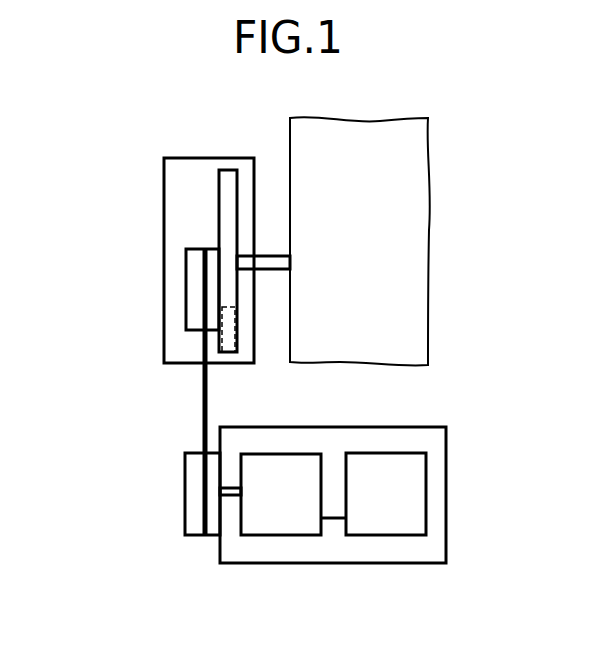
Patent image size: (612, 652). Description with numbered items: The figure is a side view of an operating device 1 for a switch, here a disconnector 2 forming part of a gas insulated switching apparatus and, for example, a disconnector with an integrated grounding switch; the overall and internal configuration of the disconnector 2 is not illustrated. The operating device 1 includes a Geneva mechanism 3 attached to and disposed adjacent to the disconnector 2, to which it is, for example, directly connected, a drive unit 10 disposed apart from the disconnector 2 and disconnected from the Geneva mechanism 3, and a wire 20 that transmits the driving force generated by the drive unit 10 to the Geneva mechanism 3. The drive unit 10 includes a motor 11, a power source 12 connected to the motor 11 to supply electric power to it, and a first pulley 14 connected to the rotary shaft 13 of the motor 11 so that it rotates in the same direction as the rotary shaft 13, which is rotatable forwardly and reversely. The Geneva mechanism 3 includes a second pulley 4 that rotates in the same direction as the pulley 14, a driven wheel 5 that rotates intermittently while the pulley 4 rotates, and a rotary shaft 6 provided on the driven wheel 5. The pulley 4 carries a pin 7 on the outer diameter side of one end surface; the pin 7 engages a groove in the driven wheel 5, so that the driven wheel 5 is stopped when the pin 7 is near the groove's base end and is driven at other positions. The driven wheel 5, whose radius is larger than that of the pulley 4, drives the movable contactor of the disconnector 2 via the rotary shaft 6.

The operating device 1 is at (76, 450).
The disconnector 2 is at (413, 262).
The Geneva mechanism 3 is at (164, 190).
The pulley 4 is at (186, 292).
The driven wheel 5 is at (229, 170).
The rotary shaft 6 is at (273, 256).
The pin 7 is at (228, 322).
The drive unit 10 is at (447, 465).
The motor 11 is at (281, 454).
The power source 12 is at (386, 453).
The rotary shaft 13 is at (229, 497).
The pulley 14 is at (185, 497).
The wire 20 is at (203, 400).